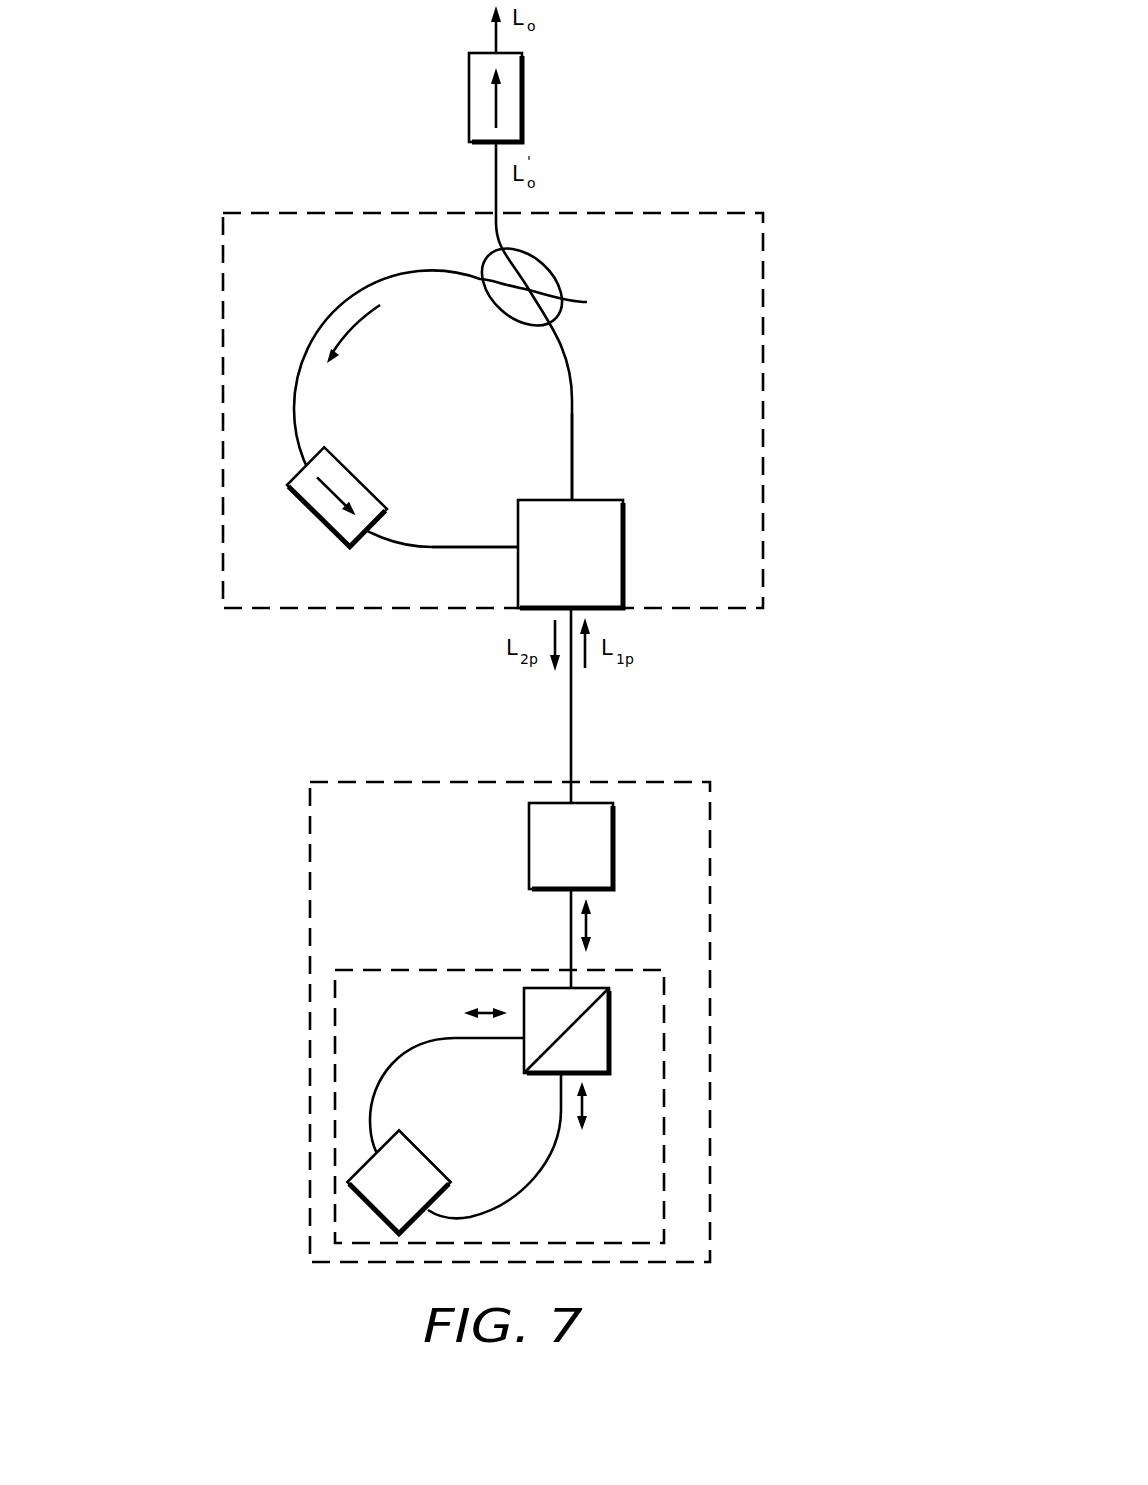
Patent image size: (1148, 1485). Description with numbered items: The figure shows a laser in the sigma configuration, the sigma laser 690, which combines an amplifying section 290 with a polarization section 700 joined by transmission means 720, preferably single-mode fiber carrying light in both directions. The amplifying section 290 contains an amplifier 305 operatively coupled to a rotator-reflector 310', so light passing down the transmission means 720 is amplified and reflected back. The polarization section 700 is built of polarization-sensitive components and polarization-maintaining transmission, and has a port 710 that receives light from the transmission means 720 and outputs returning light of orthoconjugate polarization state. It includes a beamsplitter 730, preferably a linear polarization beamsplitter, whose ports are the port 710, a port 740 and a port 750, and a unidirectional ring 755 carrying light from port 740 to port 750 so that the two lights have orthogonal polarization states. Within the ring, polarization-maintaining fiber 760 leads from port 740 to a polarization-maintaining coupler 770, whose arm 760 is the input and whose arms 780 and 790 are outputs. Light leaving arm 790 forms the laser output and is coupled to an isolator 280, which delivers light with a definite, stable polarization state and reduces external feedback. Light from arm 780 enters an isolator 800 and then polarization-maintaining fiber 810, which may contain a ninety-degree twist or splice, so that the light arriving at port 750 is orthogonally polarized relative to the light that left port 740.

The isolator 280 is at (523, 92).
The amplifying section 290 is at (676, 946).
The amplifier 305 is at (529, 858).
The rotator-reflector 310' is at (499, 1083).
The sigma laser 690 is at (270, 690).
The polarization section 700 is at (727, 373).
The port 710 is at (580, 585).
The transmission means 720 is at (572, 712).
The beamsplitter 730 is at (611, 554).
The port 740 is at (565, 518).
The port 750 is at (552, 547).
The unidirectional ring 755 is at (455, 417).
The polarization-maintaining fiber 760 is at (572, 413).
The polarization-maintaining coupler 770 is at (546, 296).
The polarization-maintaining arm 780 is at (372, 288).
The polarization-maintaining arm 790 is at (498, 247).
The isolator 800 is at (313, 515).
The polarization-maintaining fiber 810 is at (469, 548).